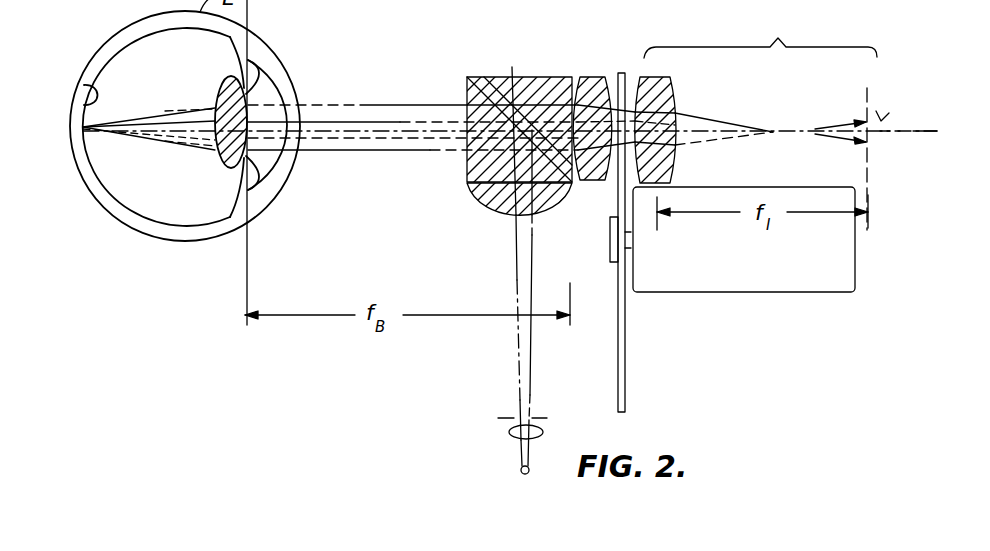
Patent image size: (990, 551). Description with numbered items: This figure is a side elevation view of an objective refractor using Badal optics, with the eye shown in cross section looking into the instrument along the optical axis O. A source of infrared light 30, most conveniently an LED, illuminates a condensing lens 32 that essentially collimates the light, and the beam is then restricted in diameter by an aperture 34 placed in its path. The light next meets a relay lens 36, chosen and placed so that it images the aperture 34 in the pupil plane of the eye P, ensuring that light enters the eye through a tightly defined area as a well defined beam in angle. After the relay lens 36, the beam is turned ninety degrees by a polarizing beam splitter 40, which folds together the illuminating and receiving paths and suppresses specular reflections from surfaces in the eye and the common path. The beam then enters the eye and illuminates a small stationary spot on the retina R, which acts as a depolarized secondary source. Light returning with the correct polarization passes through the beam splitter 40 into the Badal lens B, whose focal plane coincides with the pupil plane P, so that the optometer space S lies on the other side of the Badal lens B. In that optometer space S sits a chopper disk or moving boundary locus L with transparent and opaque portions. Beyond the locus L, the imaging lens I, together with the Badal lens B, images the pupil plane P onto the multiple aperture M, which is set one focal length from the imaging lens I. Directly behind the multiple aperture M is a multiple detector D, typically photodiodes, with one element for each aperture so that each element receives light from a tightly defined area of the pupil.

The source of infrared light 30 is at (521, 470).
The condensing lens 32 is at (509, 432).
The aperture 34 is at (547, 420).
The relay lens 36 is at (467, 192).
The polarizing beam splitter 40 is at (507, 78).
The retina R is at (84, 86).
The pupil plane of the eye P is at (250, 11).
The moving boundary locus L is at (626, 400).
The Badal lens B is at (592, 78).
The imaging lens I is at (660, 78).
The optometer space S is at (760, 35).
The multiple aperture M is at (867, 88).
The multiple detector D is at (896, 114).
The optical axis O is at (915, 132).